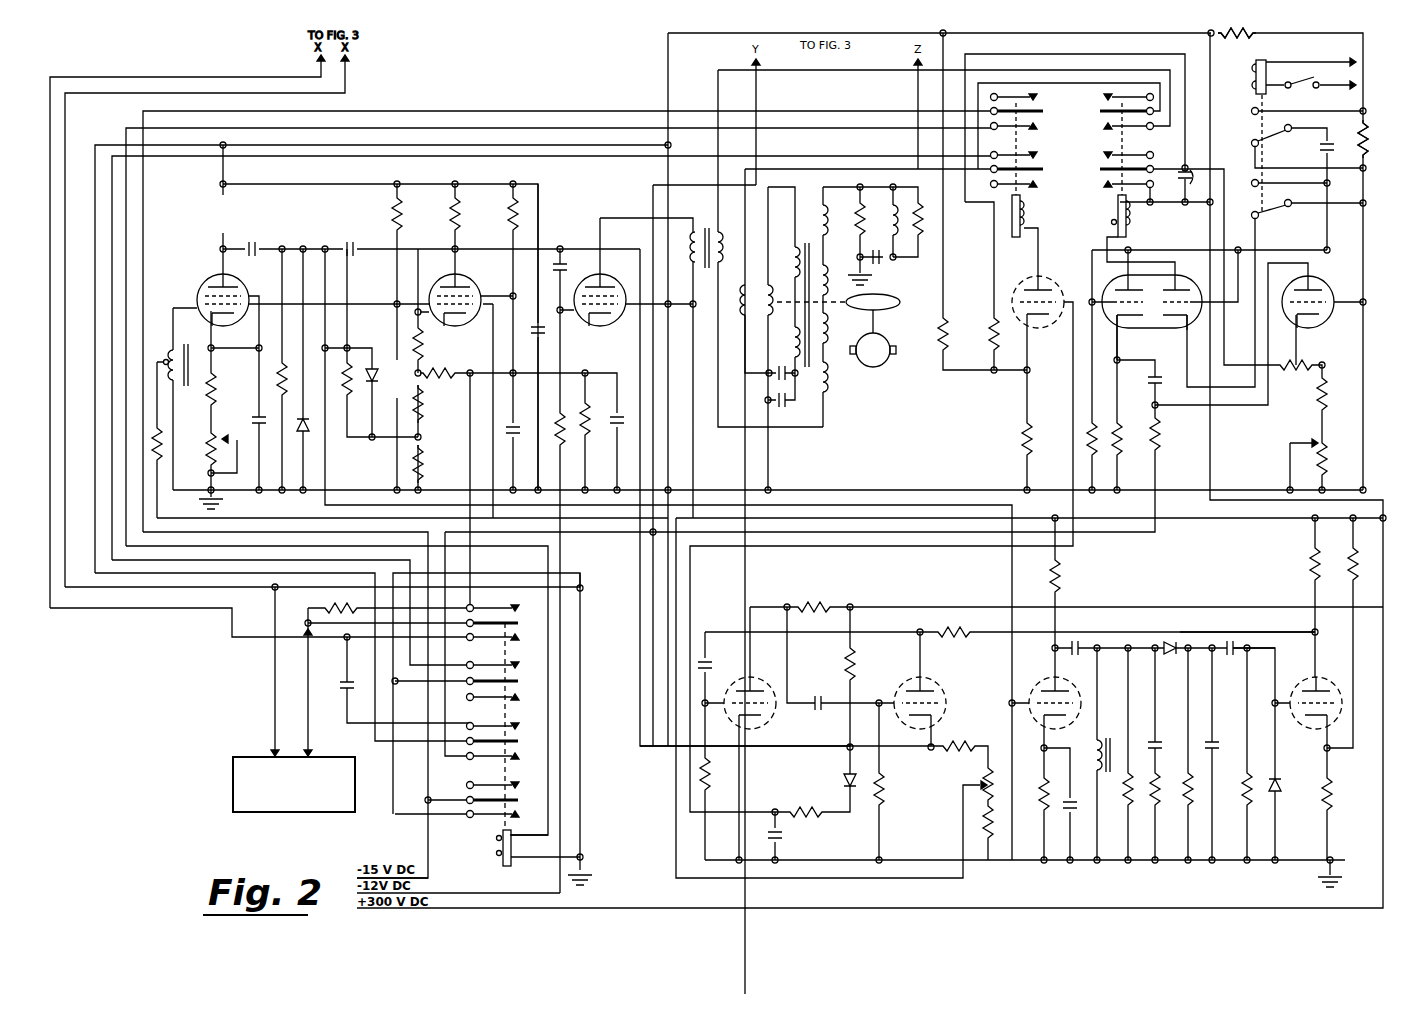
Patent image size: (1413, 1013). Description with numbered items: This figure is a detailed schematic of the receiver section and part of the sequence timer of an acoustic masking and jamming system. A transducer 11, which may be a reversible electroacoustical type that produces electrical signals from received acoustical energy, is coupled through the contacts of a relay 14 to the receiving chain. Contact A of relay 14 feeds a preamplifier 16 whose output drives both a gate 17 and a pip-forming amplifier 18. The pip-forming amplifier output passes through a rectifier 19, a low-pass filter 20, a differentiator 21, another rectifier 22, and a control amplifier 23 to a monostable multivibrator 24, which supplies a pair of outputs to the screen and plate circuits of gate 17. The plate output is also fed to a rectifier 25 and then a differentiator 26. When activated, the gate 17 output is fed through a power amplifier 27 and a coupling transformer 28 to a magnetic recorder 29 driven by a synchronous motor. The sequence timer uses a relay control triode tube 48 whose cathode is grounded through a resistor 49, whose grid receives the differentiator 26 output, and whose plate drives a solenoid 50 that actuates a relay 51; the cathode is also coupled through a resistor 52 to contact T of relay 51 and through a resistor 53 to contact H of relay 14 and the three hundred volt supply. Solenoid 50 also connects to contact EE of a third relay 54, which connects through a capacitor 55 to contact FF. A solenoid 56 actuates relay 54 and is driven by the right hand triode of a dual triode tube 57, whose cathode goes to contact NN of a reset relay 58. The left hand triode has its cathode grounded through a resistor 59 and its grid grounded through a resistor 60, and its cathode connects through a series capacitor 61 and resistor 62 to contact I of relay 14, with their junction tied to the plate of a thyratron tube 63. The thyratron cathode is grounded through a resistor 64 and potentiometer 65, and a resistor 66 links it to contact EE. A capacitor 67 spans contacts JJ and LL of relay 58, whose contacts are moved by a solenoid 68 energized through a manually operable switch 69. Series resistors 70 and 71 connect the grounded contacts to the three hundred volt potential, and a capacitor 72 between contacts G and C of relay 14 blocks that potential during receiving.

The transducer 11 is at (272, 812).
The relay 14 is at (568, 612).
The preamplifier 16 is at (202, 282).
The gate 17 is at (442, 270).
The pip-forming amplifier 18 is at (1032, 674).
The rectifier 19 is at (1172, 652).
The low-pass filter 20 is at (1240, 630).
The differentiator 21 is at (1260, 632).
The rectifier 22 is at (1280, 786).
The control amplifier 23 is at (1330, 676).
The monostable multivibrator 24 is at (790, 596).
The rectifier 25 is at (844, 774).
The differentiator 26 is at (792, 826).
The power amplifier 27 is at (588, 250).
The coupling transformer 28 is at (710, 230).
The magnetic recorder 29 is at (857, 383).
The relay control triode tube 48 is at (1030, 278).
The resistor 49 is at (1018, 434).
The solenoid 50 is at (1024, 206).
The relay 51 is at (1024, 78).
The resistor 52 is at (990, 334).
The resistor 53 is at (946, 336).
The relay 54 is at (1134, 78).
The capacitor 55 is at (1196, 204).
The solenoid 56 is at (1128, 222).
The dual triode tube 57 is at (1138, 332).
The reset relay 58 is at (1242, 96).
The resistor 59 is at (1120, 440).
The resistor 60 is at (1088, 436).
The capacitor 61 is at (1162, 378).
The resistor 62 is at (1160, 425).
The thyratron tube 63 is at (1324, 288).
The resistor 64 is at (1326, 389).
The potentiometer 65 is at (1326, 460).
The resistor 66 is at (1302, 360).
The capacitor 67 is at (1320, 153).
The solenoid 68 is at (1268, 60).
The manually operable switch 69 is at (1308, 90).
The resistor 70 is at (1360, 140).
The resistor 71 is at (1240, 40).
The capacitor 72 is at (343, 684).